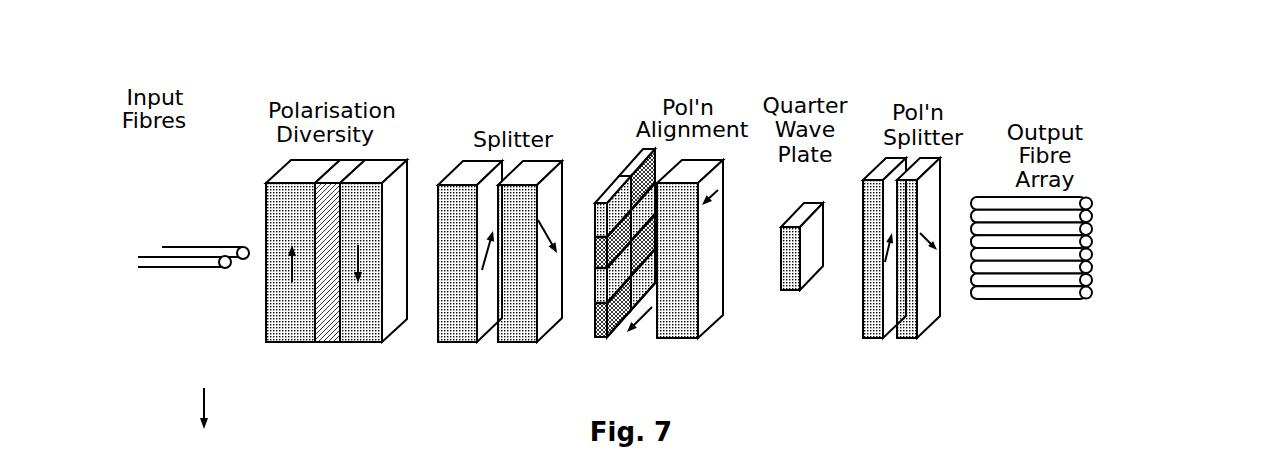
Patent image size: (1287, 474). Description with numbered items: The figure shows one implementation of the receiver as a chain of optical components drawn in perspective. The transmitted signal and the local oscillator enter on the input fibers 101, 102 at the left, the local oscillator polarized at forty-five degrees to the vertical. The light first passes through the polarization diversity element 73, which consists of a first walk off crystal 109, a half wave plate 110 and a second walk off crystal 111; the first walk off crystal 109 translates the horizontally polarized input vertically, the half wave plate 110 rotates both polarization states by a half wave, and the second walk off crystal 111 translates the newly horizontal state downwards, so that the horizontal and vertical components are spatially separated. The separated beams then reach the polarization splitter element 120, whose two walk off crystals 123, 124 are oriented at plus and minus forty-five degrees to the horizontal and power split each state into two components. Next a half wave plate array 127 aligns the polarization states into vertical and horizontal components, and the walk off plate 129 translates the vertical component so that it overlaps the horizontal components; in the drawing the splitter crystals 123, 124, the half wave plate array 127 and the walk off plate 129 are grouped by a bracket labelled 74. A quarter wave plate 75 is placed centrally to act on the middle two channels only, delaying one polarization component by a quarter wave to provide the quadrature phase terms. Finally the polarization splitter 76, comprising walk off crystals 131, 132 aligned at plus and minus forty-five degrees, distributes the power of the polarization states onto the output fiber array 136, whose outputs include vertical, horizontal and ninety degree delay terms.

The polarization diversity element 73 is at (340, 234).
The splitter and polarisation alignment assembly 74 is at (622, 226).
The quarter wave plate 75 is at (788, 290).
The polarization splitter 76 is at (926, 227).
The input fiber 101 is at (190, 268).
The input fiber 102 is at (212, 247).
The first walk off crystal 109 is at (277, 178).
The half wave plate 110 is at (353, 158).
The second walk off crystal 111 is at (401, 158).
The polarization splitter element 120 is at (546, 103).
The walk off crystal 123 is at (470, 160).
The walk off crystal 124 is at (560, 160).
The half wave plate array 127 is at (632, 148).
The walk off plate 129 is at (731, 277).
The walk off crystal 131 is at (883, 158).
The walk off crystal 132 is at (940, 165).
The output fiber array 136 is at (1110, 190).